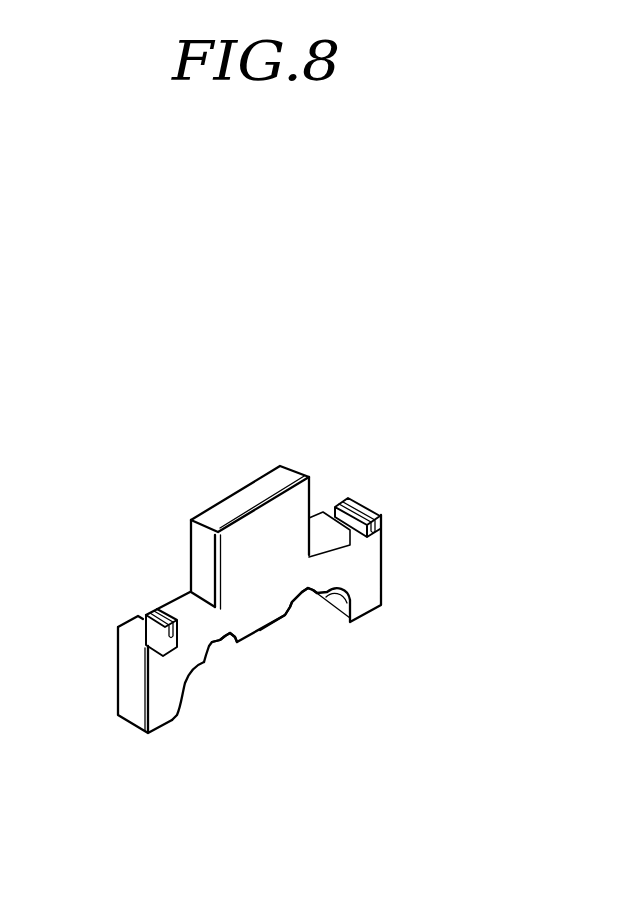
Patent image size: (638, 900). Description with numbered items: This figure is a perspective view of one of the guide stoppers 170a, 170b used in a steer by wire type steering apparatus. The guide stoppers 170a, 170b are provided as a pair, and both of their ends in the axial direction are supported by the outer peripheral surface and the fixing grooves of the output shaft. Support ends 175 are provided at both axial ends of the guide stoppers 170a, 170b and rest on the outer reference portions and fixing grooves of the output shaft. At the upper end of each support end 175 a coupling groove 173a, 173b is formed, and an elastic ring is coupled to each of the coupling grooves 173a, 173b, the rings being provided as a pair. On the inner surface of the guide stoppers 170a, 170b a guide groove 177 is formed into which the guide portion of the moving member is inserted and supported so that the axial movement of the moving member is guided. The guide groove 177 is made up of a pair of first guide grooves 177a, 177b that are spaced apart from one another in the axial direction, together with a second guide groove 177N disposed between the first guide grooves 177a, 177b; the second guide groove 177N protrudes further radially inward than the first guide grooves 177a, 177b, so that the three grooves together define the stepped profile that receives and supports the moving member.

The guide stopper 170a is at (197, 406).
The guide stopper 170b is at (258, 586).
The guide groove 177 is at (250, 498).
The coupling groove 173a is at (353, 510).
The coupling groove 173b is at (168, 637).
The support end 175 is at (170, 728).
The first guide groove 177a is at (310, 592).
The first guide groove 177b is at (228, 644).
The second guide groove 177N is at (263, 636).